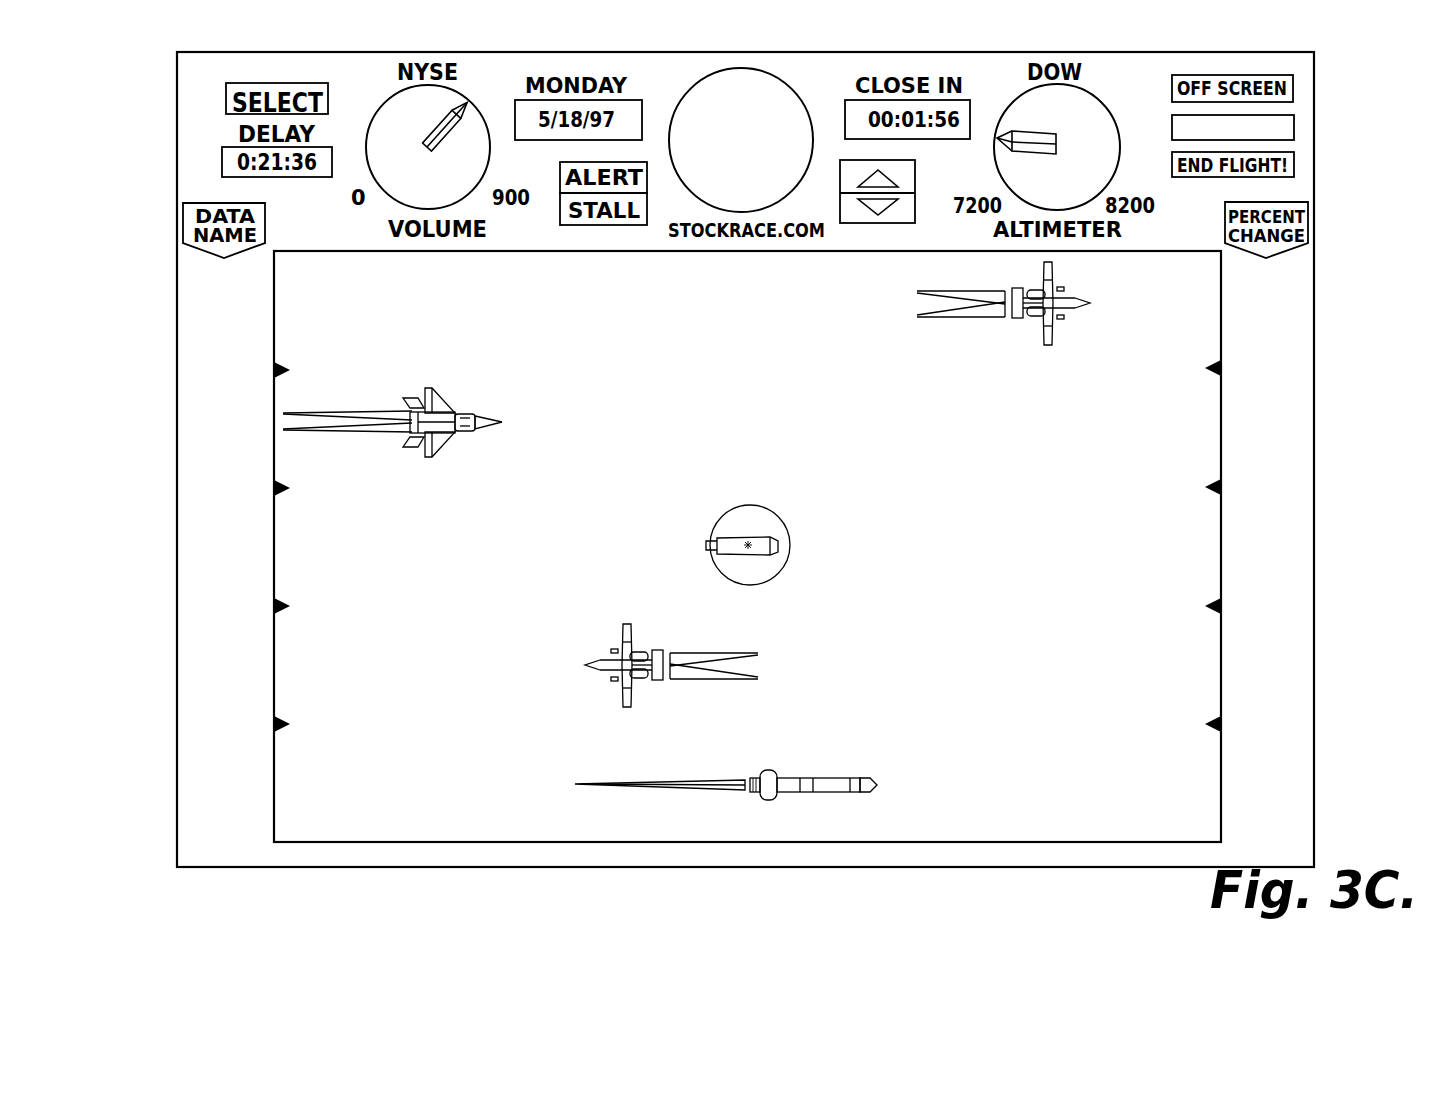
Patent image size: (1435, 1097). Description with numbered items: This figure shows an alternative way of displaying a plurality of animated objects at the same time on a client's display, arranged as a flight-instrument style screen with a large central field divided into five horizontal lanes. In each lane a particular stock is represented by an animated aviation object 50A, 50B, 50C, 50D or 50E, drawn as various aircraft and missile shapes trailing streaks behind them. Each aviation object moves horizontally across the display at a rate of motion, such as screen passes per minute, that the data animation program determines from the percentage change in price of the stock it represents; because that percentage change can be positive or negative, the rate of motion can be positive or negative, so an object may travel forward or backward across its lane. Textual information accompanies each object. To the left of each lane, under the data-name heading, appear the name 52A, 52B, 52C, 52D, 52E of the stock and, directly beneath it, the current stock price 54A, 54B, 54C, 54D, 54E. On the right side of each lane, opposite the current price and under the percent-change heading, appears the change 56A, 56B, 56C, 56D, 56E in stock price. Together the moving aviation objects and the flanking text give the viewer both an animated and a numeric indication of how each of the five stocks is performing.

The animated aviation object 50A is at (1055, 325).
The animated aviation object 50B is at (442, 443).
The animated aviation object 50C is at (783, 563).
The animated aviation object 50D is at (614, 689).
The animated aviation object 50E is at (781, 797).
The name 52A is at (184, 302).
The name 52B is at (184, 420).
The name 52C is at (184, 538).
The name 52D is at (184, 658).
The name 52E is at (184, 773).
The current stock price 54A is at (184, 323).
The current stock price 54B is at (184, 440).
The current stock price 54C is at (184, 559).
The current stock price 54D is at (184, 680).
The current stock price 54E is at (184, 797).
The change in stock price 56A is at (1283, 308).
The change in stock price 56B is at (1283, 429).
The change in stock price 56C is at (1283, 538).
The change in stock price 56D is at (1298, 665).
The change in stock price 56E is at (1283, 788).